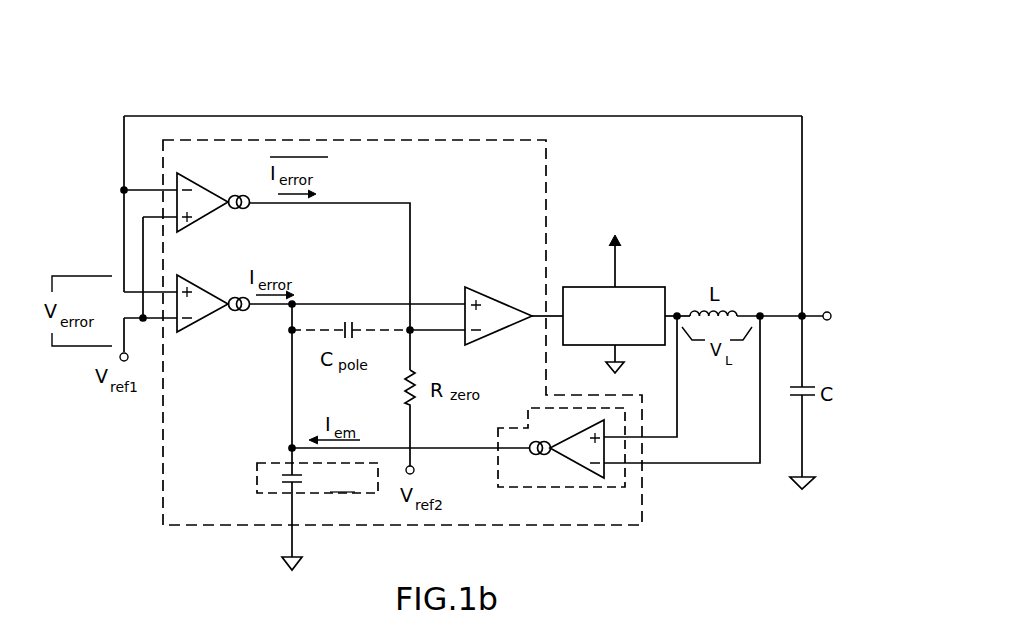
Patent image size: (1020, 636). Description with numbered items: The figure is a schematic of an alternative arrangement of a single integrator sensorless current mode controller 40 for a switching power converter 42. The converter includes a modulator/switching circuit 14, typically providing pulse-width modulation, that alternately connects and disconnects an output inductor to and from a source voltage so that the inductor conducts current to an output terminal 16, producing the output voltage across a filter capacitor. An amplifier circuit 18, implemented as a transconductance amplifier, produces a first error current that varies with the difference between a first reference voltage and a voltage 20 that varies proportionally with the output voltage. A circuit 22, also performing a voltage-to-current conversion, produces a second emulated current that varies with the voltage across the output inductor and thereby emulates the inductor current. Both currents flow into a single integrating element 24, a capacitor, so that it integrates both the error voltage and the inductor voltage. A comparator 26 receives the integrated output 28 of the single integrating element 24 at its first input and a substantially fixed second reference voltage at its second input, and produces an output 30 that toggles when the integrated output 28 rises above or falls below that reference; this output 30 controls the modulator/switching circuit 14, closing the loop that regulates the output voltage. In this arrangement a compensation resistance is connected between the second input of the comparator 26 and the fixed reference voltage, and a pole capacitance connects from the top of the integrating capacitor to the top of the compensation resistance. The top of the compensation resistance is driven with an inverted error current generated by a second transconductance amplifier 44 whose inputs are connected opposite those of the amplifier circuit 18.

The modulator/switching circuit 14 is at (655, 287).
The output terminal 16 is at (823, 324).
The amplifier circuit 18 is at (205, 330).
The voltage 20 is at (124, 143).
The circuit 22 is at (553, 487).
The single integrating element 24 is at (257, 487).
The comparator 26 is at (500, 300).
The integrated output 28 is at (352, 304).
The comparator output 30 is at (552, 316).
The controller 40 is at (320, 140).
The switching power converter 42 is at (480, 98).
The second transconductance amplifier 44 is at (205, 230).